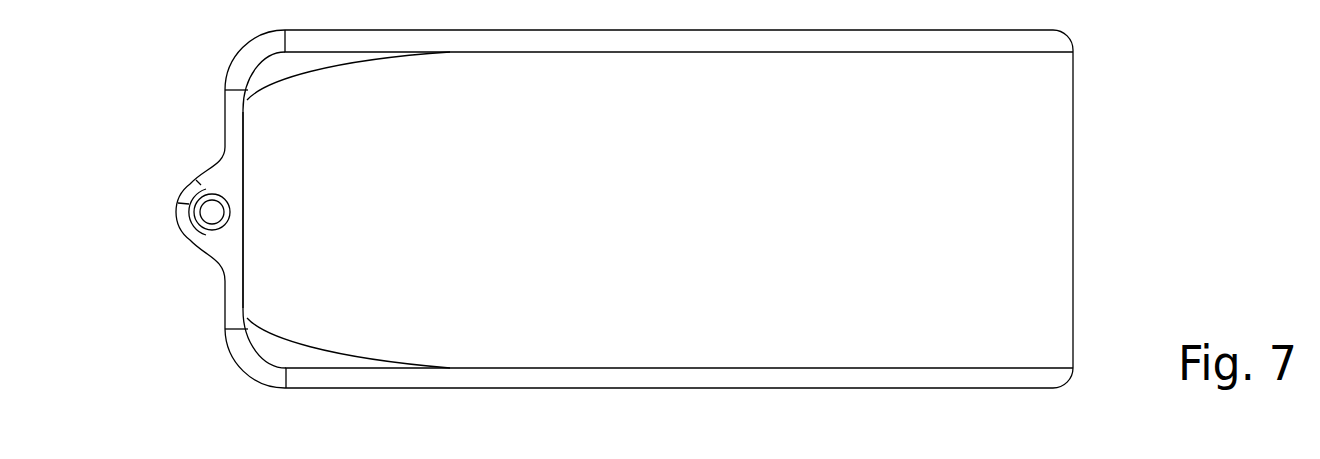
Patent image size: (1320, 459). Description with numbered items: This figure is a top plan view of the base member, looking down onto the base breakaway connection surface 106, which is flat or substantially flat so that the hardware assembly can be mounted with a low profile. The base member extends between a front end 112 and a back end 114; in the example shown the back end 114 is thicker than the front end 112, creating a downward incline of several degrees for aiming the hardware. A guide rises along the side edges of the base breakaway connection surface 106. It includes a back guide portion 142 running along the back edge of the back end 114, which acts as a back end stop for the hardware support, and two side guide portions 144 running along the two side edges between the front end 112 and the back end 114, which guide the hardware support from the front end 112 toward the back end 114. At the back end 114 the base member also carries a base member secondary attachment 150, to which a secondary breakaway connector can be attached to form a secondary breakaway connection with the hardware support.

The base breakaway connection surface 106 is at (680, 223).
The front end 112 is at (1112, 210).
The back end 114 is at (168, 118).
The back guide portion 142 is at (238, 262).
The side guide portions 144 is at (802, 47).
The base member secondary attachment 150 is at (210, 212).